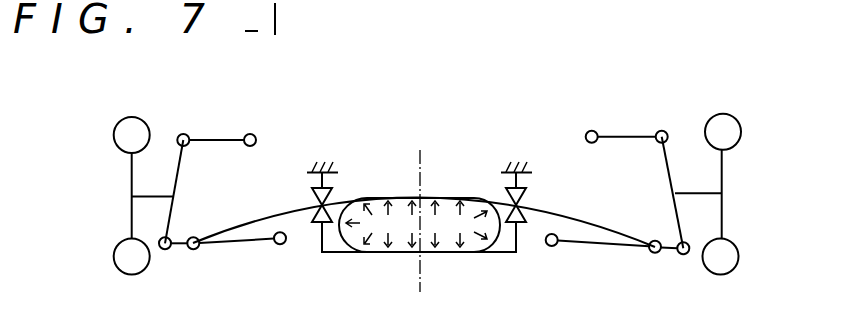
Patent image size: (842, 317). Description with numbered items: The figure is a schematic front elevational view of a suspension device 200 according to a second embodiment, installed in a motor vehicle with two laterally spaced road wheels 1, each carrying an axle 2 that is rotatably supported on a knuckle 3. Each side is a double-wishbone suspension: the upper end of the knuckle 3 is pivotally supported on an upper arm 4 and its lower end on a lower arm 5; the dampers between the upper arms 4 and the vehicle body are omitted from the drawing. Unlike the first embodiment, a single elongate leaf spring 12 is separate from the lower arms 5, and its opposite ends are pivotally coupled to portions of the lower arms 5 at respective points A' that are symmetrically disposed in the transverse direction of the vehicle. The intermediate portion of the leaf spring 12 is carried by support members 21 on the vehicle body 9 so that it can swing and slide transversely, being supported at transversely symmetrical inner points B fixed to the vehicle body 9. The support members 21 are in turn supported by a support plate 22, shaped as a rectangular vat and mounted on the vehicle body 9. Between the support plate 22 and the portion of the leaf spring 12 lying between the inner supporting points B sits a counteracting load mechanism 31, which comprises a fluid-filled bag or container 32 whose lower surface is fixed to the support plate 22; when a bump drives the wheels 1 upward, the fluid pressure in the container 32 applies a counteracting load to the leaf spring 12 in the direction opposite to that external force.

The road wheel 1 is at (127, 116).
The axle 2 is at (155, 195).
The knuckle 3 is at (182, 163).
The upper arm 4 is at (218, 138).
The lower arm 5 is at (242, 247).
The vehicle body 9 is at (321, 167).
The leaf spring 12 is at (480, 200).
The support member 21 is at (319, 218).
The support plate 22 is at (342, 253).
The counteracting load mechanism 31 is at (403, 227).
The container 32 is at (480, 253).
The suspension device 200 is at (556, 85).
The pivotal coupling point A' is at (189, 270).
The inner supporting point B is at (321, 205).